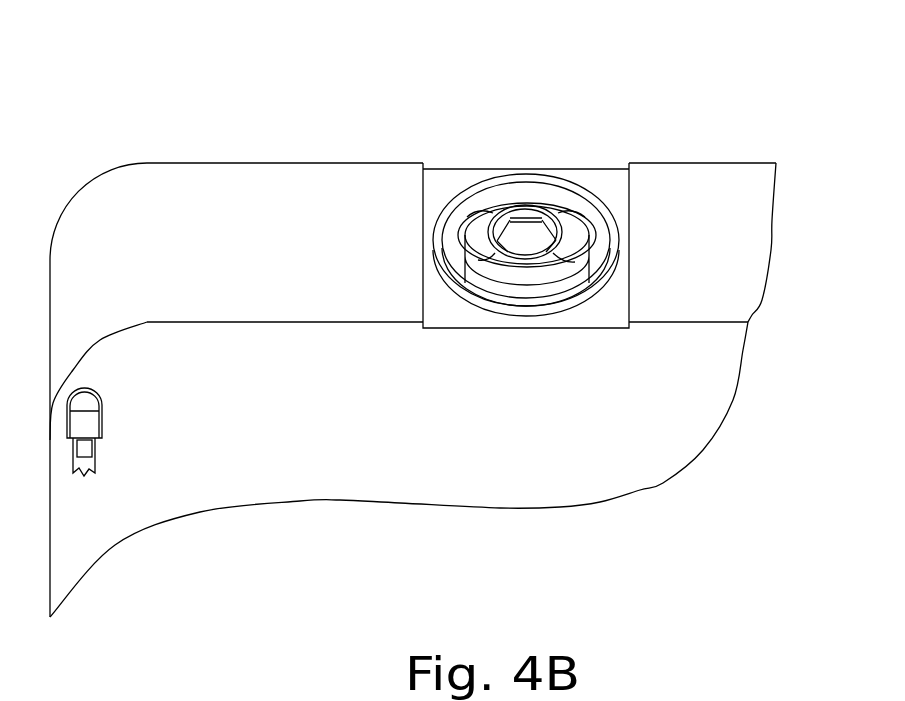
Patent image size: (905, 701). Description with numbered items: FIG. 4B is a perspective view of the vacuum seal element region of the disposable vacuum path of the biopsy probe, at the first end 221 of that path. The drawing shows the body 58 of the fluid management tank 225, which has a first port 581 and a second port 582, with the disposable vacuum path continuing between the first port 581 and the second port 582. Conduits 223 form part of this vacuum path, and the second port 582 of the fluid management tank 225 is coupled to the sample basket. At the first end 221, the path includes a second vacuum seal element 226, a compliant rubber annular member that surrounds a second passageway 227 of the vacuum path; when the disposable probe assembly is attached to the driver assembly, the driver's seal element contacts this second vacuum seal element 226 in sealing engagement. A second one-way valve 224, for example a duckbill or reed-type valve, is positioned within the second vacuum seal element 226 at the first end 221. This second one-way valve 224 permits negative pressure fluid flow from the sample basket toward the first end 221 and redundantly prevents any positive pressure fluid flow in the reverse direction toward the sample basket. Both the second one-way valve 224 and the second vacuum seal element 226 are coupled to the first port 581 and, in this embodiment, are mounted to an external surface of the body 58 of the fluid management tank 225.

The body 58 is at (265, 163).
The first end 221 is at (667, 127).
The conduits 223 is at (95, 467).
The second one-way valve 224 is at (532, 238).
The fluid management tank 225 is at (188, 140).
The second vacuum seal element 226 is at (498, 202).
The second passageway 227 is at (524, 203).
The first port 581 is at (611, 180).
The second port 582 is at (143, 408).